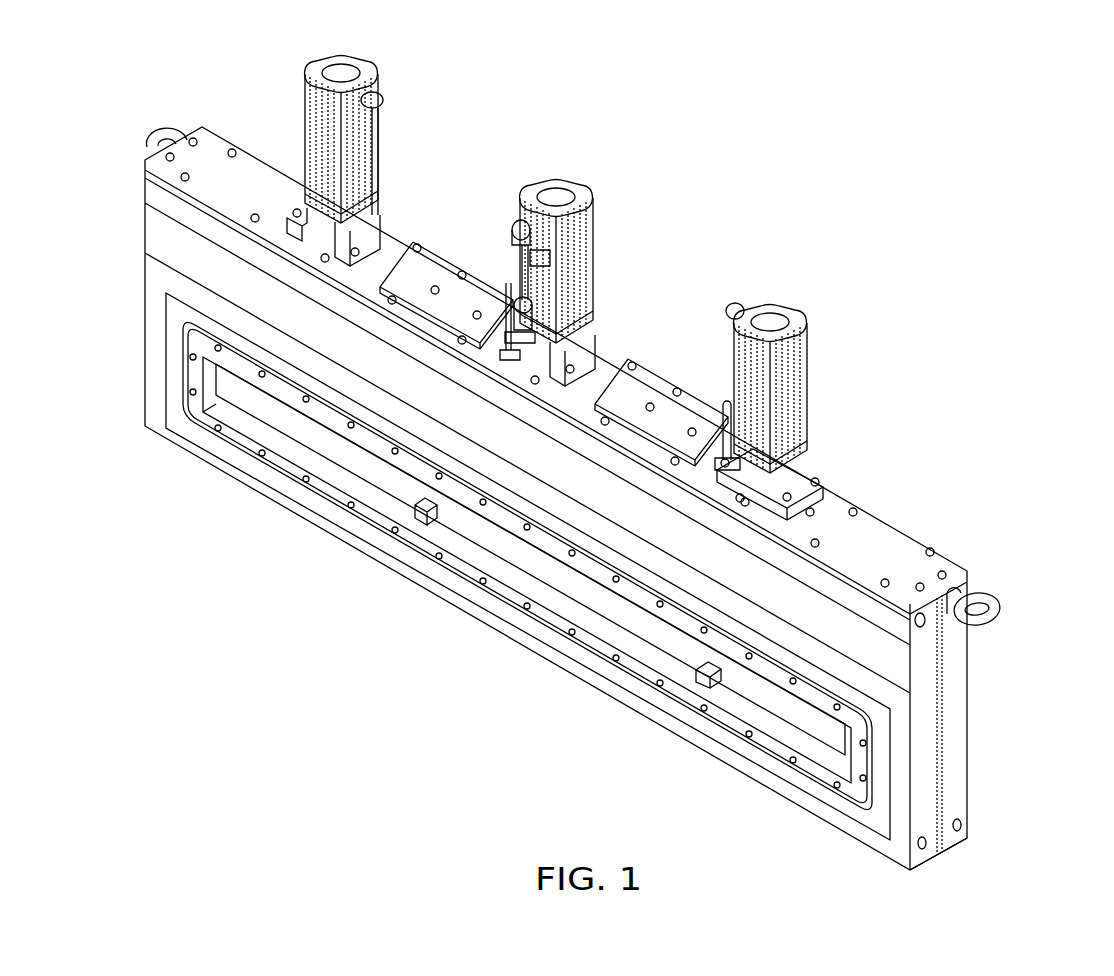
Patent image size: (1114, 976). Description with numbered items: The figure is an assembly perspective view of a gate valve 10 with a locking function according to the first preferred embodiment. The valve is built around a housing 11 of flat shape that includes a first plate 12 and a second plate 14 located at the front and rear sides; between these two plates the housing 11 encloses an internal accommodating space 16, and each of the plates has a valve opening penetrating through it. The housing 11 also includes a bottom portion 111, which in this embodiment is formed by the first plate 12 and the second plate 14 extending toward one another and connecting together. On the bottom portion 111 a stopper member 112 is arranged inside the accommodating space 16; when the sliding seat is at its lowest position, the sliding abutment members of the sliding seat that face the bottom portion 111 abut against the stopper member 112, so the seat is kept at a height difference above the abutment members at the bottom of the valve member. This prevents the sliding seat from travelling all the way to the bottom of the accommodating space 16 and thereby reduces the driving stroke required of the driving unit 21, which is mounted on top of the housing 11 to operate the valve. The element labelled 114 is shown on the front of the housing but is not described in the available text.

The gate valve 10 is at (1050, 170).
The housing 11 is at (967, 710).
The first plate 12 is at (967, 752).
The second plate 14 is at (897, 850).
The accommodating space 16 is at (565, 595).
The driving unit 21 is at (792, 298).
The bottom portion 111 is at (927, 862).
The stopper member 112 is at (418, 517).
The inner plate 114 is at (780, 732).